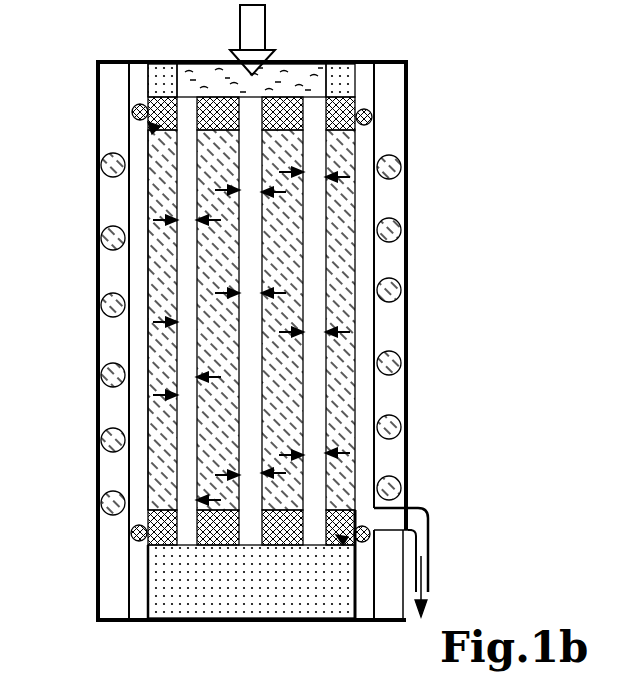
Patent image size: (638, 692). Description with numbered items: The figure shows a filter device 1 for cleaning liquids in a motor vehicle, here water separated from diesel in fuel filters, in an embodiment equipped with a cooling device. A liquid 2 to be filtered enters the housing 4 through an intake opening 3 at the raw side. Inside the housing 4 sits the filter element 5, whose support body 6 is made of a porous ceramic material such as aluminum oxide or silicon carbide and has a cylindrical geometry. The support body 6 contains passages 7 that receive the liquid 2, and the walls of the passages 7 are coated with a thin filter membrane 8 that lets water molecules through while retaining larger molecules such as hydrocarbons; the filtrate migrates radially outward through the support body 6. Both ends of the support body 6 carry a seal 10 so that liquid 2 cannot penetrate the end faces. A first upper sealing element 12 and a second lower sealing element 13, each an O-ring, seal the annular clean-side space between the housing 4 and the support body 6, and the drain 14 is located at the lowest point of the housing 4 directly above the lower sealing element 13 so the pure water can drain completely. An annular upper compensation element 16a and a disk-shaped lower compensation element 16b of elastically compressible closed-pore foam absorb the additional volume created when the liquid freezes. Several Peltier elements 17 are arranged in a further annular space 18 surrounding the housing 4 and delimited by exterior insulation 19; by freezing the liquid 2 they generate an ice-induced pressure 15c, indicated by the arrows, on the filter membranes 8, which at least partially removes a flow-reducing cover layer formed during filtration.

The filter device 1 is at (313, 341).
The liquid to be filtered 2 is at (310, 75).
The intake opening 3 is at (218, 62).
The housing 4 is at (128, 338).
The filter element 5 is at (132, 283).
The support body 6 is at (150, 190).
The passages 7 is at (180, 465).
The filter membrane 8 is at (332, 397).
The seal 10 is at (148, 128).
The first upper sealing element 12 is at (128, 96).
The second lower sealing element 13 is at (123, 556).
The drain 14 is at (414, 512).
The ice-induced pressure 15c is at (155, 433).
The upper compensation element 16a is at (360, 80).
The lower compensation element 16b is at (202, 585).
The Peltier elements 17 is at (397, 218).
The further annular space 18 is at (392, 336).
The insulation 19 is at (409, 122).